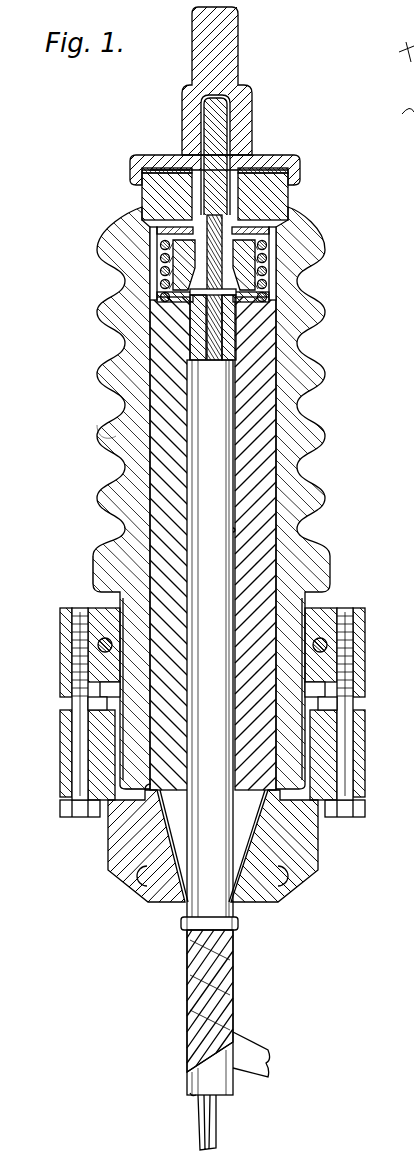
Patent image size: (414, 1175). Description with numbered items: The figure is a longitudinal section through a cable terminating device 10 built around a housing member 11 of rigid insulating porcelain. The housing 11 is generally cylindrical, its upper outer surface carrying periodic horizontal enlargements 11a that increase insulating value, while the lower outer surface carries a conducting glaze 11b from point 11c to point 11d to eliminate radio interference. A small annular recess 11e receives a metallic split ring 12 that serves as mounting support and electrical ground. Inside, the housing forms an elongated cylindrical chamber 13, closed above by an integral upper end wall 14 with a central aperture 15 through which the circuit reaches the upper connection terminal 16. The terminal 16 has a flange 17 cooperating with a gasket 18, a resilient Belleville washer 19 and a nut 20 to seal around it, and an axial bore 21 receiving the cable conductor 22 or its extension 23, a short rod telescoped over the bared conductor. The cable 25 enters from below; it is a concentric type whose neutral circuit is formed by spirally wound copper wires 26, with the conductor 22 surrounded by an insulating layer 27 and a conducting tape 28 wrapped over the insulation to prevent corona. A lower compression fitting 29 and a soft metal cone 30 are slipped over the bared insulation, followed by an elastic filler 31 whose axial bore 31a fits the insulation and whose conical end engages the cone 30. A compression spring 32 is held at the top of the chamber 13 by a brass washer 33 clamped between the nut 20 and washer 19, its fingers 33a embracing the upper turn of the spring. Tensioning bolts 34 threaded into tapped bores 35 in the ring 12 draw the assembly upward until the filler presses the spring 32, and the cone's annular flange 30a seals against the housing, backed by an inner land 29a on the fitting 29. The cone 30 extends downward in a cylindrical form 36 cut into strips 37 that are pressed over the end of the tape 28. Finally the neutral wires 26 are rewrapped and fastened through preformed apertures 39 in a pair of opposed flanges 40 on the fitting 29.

The cable terminating device 10 is at (90, 987).
The housing member 11 is at (135, 357).
The periodic horizontal enlargements 11a is at (100, 432).
The conducting glaze 11b is at (121, 598).
The point 11c is at (104, 558).
The point 11d is at (136, 775).
The annular recess 11e is at (303, 626).
The split ring 12 is at (62, 642).
The cylindrical chamber 13 is at (200, 285).
The upper end wall 14 is at (168, 220).
The aperture 15 is at (185, 187).
The upper connection terminal 16 is at (226, 41).
The flange 17 is at (146, 156).
The gasket 18 is at (170, 168).
The Belleville washer 19 is at (168, 240).
The nut 20 is at (180, 300).
The axial bore 21 is at (231, 92).
The cable conductor 22 is at (221, 222).
The extension 23 is at (216, 128).
The cable 25 is at (172, 1051).
The neutral wires 26 is at (222, 965).
The insulating layer 27 is at (240, 345).
The conducting tape 28 is at (245, 1057).
The lower compression fitting 29 is at (297, 850).
The inner land 29a is at (288, 805).
The soft metal cone 30 is at (255, 902).
The annular flange 30a is at (143, 795).
The elastic filler 31 is at (262, 476).
The axial bore 31a is at (236, 530).
The compression spring 32 is at (256, 270).
The brass washer 33 is at (268, 240).
The fingers 33a is at (258, 262).
The tensioning bolts 34 is at (80, 742).
The tapped bores 35 is at (72, 702).
The cylindrical form 36 is at (238, 919).
The strips 37 is at (188, 944).
The apertures 39 is at (140, 873).
The flanges 40 is at (128, 846).